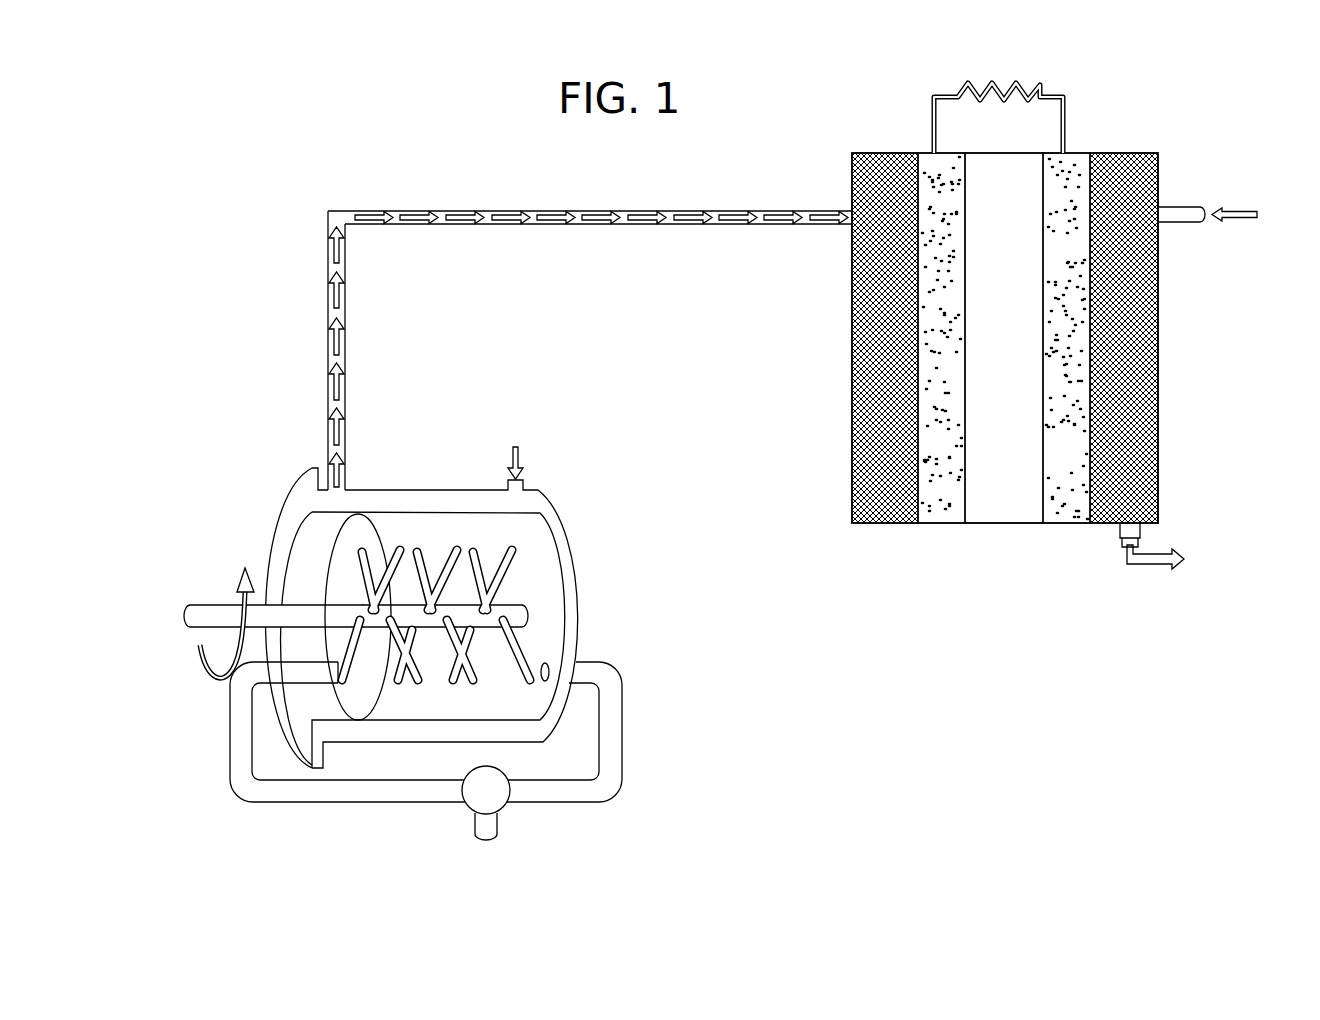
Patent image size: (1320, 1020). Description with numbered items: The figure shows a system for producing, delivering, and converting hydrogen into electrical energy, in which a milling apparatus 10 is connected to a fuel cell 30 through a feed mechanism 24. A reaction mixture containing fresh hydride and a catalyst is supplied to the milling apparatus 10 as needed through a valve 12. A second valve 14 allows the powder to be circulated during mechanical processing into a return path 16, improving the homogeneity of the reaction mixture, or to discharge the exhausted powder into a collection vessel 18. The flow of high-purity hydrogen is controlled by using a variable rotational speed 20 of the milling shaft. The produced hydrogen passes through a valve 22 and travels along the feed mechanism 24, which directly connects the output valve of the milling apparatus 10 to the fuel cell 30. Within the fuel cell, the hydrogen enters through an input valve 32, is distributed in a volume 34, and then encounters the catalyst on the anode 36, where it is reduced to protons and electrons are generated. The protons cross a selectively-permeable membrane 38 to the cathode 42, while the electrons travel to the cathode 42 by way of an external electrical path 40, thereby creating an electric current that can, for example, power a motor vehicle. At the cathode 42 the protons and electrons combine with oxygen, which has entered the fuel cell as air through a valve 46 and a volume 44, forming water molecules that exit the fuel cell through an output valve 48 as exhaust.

The milling apparatus 10 is at (208, 503).
The valve 12 is at (516, 445).
The valve 14 is at (505, 817).
The return path 16 is at (355, 802).
The collection vessel 18 is at (482, 842).
The variable rotational speed of the shaft 20 is at (335, 623).
The valve 22 is at (352, 485).
The feed mechanism 24 is at (482, 210).
The fuel cell 30 is at (1029, 331).
The input valve 32 is at (840, 230).
The volume 34 is at (852, 352).
The anode 36 is at (937, 518).
The selectively-permeable membrane 38 is at (988, 518).
The external electrical path 40 is at (1010, 93).
The cathode 42 is at (1065, 518).
The volume 44 is at (1157, 353).
The valve 46 is at (1228, 214).
The output valve 48 is at (1172, 548).